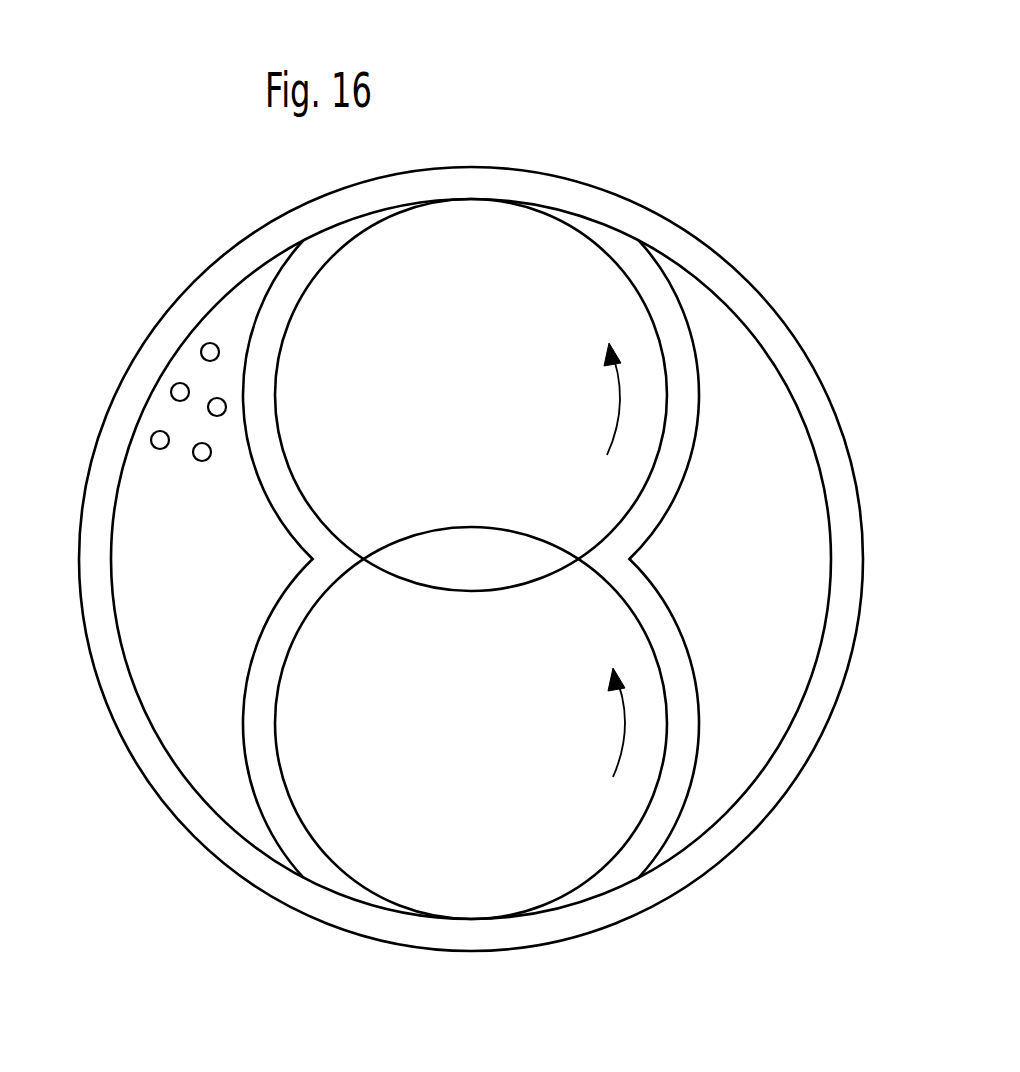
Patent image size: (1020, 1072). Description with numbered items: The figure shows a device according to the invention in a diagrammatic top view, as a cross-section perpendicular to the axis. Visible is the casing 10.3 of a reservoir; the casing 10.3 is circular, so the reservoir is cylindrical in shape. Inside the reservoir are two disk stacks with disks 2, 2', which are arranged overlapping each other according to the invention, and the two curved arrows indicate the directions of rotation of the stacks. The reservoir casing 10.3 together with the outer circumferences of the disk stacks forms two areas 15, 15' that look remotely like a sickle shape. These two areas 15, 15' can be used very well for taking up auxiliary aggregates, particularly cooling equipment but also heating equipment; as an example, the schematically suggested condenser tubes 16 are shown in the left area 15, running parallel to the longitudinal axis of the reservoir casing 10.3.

The disk 2 is at (471, 758).
The disk 2' is at (483, 353).
The casing 10.3 is at (232, 867).
The area 15 is at (243, 558).
The area 15' is at (705, 558).
The condenser tubes 16 is at (200, 350).